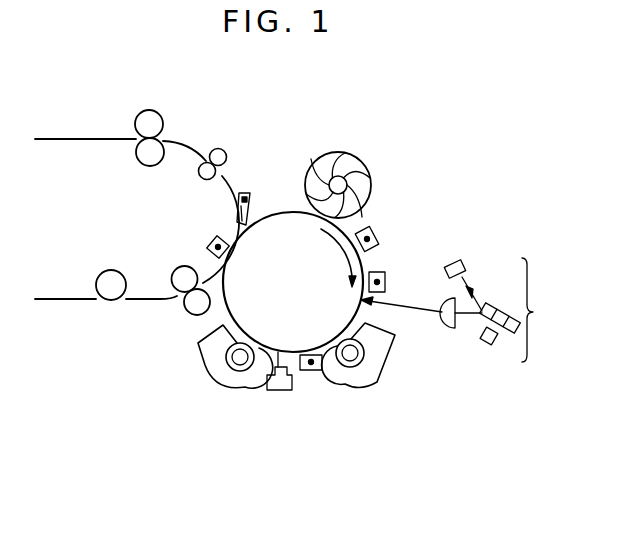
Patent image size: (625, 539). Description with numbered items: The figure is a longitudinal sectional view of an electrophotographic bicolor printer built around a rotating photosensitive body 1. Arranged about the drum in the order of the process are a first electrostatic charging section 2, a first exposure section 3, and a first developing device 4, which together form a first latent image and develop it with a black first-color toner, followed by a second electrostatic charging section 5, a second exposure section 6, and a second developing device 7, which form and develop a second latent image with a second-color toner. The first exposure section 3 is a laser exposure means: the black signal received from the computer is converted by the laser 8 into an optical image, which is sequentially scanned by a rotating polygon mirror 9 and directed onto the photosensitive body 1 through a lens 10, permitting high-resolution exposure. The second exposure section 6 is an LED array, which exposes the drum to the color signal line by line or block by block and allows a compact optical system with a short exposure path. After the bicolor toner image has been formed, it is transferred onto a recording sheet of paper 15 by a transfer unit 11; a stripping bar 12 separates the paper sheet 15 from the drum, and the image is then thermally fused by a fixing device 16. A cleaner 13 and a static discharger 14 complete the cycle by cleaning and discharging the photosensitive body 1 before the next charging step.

The photosensitive body 1 is at (279, 212).
The first electrostatic charging section 2 is at (386, 283).
The first exposure section 3 is at (560, 331).
The first developing device 4 is at (381, 366).
The second electrostatic charging section 5 is at (311, 372).
The second exposure section 6 is at (276, 393).
The second developing device 7 is at (210, 367).
The laser 8 is at (463, 259).
The rotating polygon mirror 9 is at (497, 346).
The lens 10 is at (448, 330).
The transfer unit 11 is at (209, 238).
The stripping bar 12 is at (243, 191).
The cleaner 13 is at (368, 172).
The static discharger 14 is at (376, 231).
The recording sheet of paper 15 is at (62, 293).
The fixing device 16 is at (140, 162).